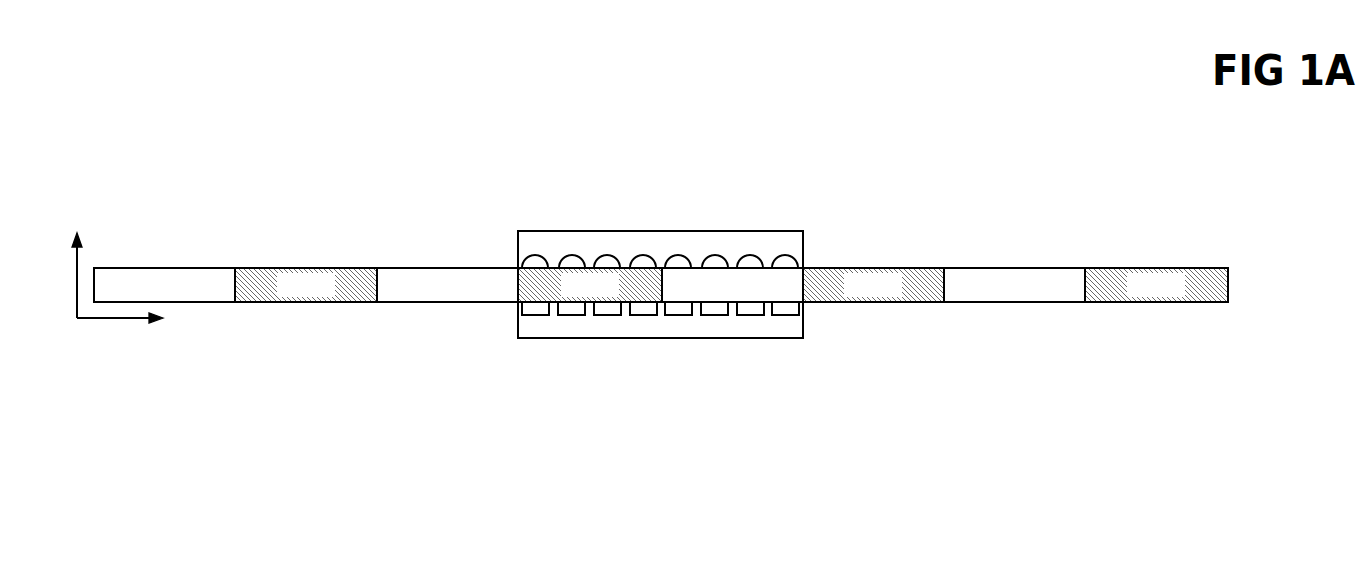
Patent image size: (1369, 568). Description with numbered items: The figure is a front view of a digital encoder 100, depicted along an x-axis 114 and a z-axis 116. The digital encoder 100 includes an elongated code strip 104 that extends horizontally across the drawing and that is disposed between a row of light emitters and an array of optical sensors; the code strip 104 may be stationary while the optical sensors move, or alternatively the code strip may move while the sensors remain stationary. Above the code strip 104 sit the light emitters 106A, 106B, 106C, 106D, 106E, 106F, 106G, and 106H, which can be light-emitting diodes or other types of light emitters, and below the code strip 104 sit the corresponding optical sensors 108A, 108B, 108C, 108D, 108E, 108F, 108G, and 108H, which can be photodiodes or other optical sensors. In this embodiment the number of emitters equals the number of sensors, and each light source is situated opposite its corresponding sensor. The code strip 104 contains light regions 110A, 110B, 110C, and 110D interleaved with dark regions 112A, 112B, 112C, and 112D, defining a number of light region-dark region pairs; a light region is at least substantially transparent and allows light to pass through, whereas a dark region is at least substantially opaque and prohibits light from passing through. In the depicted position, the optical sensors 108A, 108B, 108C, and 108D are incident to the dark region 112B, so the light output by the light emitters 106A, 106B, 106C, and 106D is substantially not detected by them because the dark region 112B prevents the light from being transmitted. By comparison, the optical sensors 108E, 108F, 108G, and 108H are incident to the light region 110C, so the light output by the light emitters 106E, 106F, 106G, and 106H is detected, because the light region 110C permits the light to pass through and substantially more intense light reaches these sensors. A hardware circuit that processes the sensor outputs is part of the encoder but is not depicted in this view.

The digital encoder 100 is at (149, 129).
The code strip 104 is at (1228, 282).
The light emitter 106A is at (518, 260).
The light emitter 106B is at (555, 262).
The light emitter 106C is at (590, 262).
The light emitter 106D is at (687, 222).
The light emitter 106E is at (697, 262).
The light emitter 106F is at (732, 262).
The light emitter 106G is at (768, 262).
The light emitter 106H is at (842, 213).
The optical sensor 108A is at (533, 315).
The optical sensor 108B is at (571, 315).
The optical sensor 108C is at (607, 315).
The optical sensor 108D is at (644, 315).
The optical sensor 108E is at (679, 315).
The optical sensor 108F is at (714, 315).
The optical sensor 108G is at (750, 315).
The optical sensor 108H is at (785, 315).
The light region 110A is at (191, 293).
The light region 110B is at (474, 293).
The light region 110C is at (759, 293).
The light region 110D is at (1041, 293).
The dark region 112A is at (333, 293).
The dark region 112B is at (617, 293).
The dark region 112C is at (900, 293).
The dark region 112D is at (1183, 293).
The x-axis 114 is at (118, 323).
The z-axis 116 is at (122, 220).